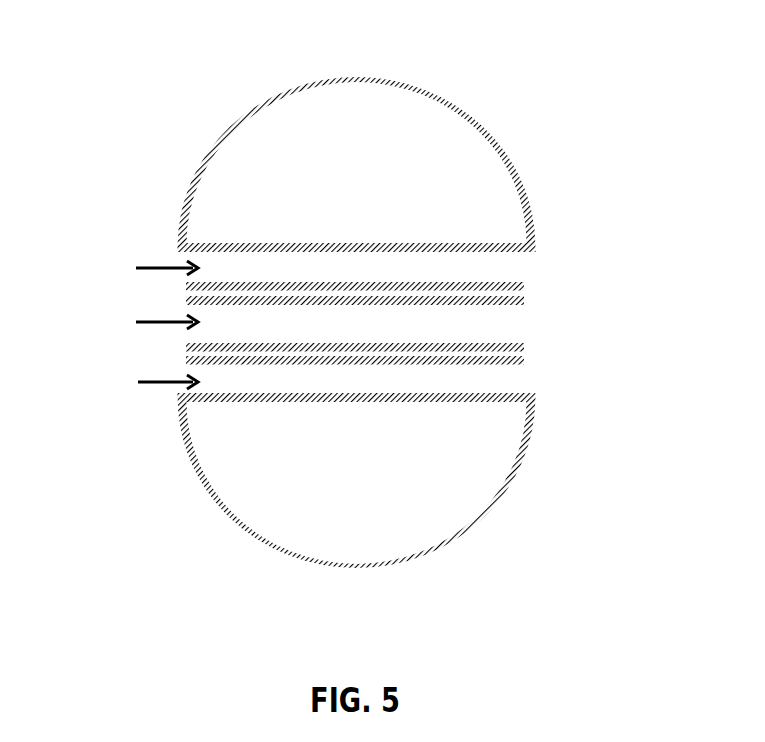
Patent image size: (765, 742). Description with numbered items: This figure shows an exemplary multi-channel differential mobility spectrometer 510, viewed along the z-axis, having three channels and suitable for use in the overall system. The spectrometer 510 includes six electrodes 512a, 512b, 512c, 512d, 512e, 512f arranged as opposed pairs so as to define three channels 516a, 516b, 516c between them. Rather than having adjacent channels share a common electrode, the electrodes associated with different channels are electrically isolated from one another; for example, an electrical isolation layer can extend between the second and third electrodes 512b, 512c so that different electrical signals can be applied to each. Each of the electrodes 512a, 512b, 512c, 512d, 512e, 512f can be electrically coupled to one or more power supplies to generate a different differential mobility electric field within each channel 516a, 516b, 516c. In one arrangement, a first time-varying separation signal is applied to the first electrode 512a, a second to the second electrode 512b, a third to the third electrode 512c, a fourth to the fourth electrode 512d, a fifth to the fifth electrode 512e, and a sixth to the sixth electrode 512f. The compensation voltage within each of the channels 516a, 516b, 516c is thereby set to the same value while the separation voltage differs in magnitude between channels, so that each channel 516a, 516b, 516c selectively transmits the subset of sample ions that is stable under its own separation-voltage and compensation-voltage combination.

The multi-channel differential mobility spectrometer 510 is at (195, 117).
The first electrode 512a is at (392, 100).
The second electrode 512b is at (462, 287).
The third electrode 512c is at (520, 296).
The fourth electrode 512d is at (478, 352).
The fifth electrode 512e is at (416, 362).
The sixth electrode 512f is at (253, 506).
The first channel 516a is at (354, 267).
The second channel 516b is at (354, 327).
The third channel 516c is at (353, 382).